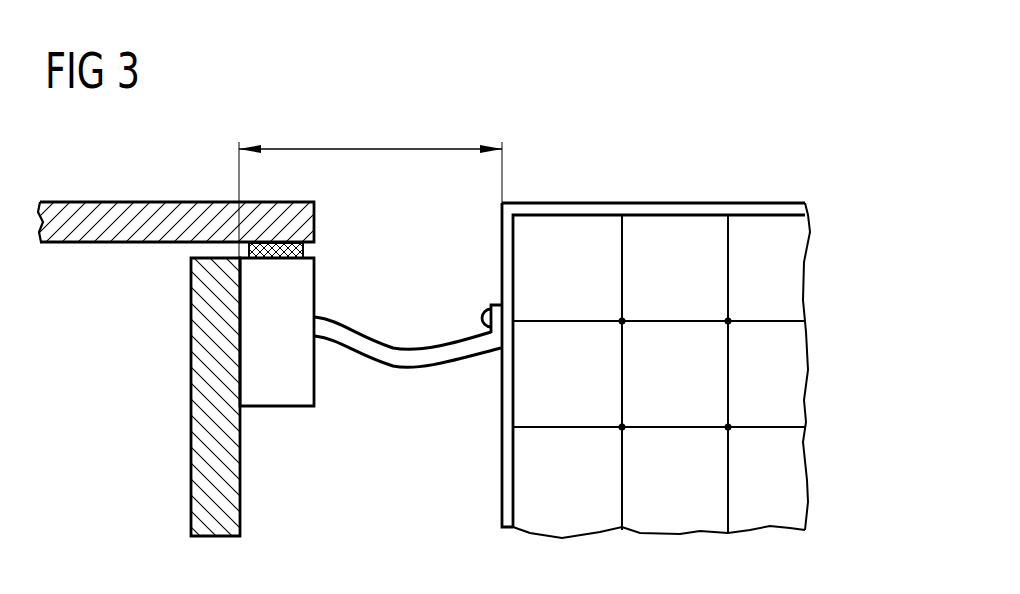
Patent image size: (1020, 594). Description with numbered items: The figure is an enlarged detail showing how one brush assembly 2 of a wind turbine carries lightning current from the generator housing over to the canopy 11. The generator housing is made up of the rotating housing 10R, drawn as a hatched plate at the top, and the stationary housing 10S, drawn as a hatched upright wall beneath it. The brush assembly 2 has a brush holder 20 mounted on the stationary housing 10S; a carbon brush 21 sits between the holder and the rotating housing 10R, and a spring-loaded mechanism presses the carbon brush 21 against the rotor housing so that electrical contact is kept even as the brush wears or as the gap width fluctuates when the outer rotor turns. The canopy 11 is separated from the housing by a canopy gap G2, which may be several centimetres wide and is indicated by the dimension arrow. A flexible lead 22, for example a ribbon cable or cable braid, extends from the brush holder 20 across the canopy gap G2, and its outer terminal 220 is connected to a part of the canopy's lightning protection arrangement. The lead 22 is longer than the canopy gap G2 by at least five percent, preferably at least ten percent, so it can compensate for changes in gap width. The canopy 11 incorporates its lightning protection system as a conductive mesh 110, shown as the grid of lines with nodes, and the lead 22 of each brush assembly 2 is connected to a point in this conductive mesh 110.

The rotating housing 10R is at (167, 217).
The stationary housing 10S is at (200, 445).
The canopy gap G2 is at (370, 148).
The brush assembly 2 is at (370, 291).
The brush holder 20 is at (280, 397).
The carbon brush 21 is at (305, 248).
The lead 22 is at (380, 353).
The outer terminal 220 is at (497, 343).
The canopy 11 is at (668, 210).
The conductive mesh 110 is at (799, 499).